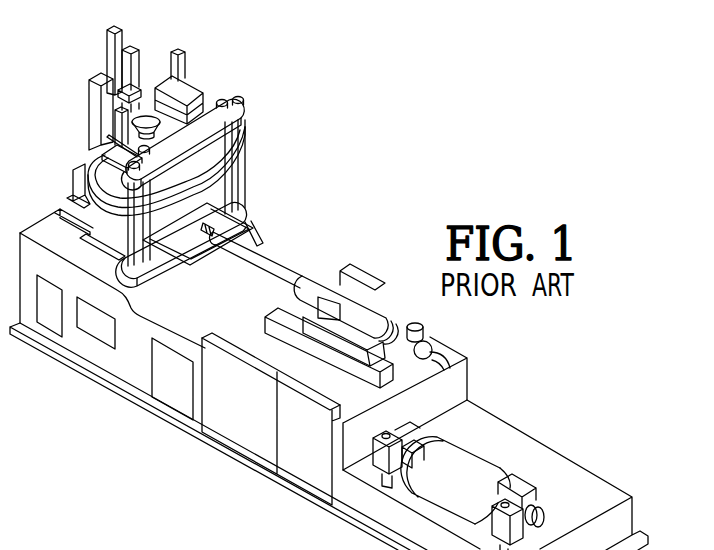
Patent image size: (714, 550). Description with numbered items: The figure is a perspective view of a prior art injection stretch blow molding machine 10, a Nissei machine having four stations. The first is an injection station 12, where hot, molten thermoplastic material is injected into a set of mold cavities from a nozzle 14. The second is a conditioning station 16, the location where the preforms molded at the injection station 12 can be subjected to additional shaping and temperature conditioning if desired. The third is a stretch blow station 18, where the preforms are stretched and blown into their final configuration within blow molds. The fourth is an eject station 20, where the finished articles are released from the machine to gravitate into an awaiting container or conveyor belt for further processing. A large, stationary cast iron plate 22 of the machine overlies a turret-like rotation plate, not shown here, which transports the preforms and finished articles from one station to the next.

The injection stretch blow molding machine 10 is at (402, 212).
The injection station 12 is at (185, 243).
The nozzle 14 is at (263, 255).
The conditioning station 16 is at (206, 84).
The stretch blow station 18 is at (91, 77).
The eject station 20 is at (86, 155).
The stationary cast iron plate 22 is at (245, 146).